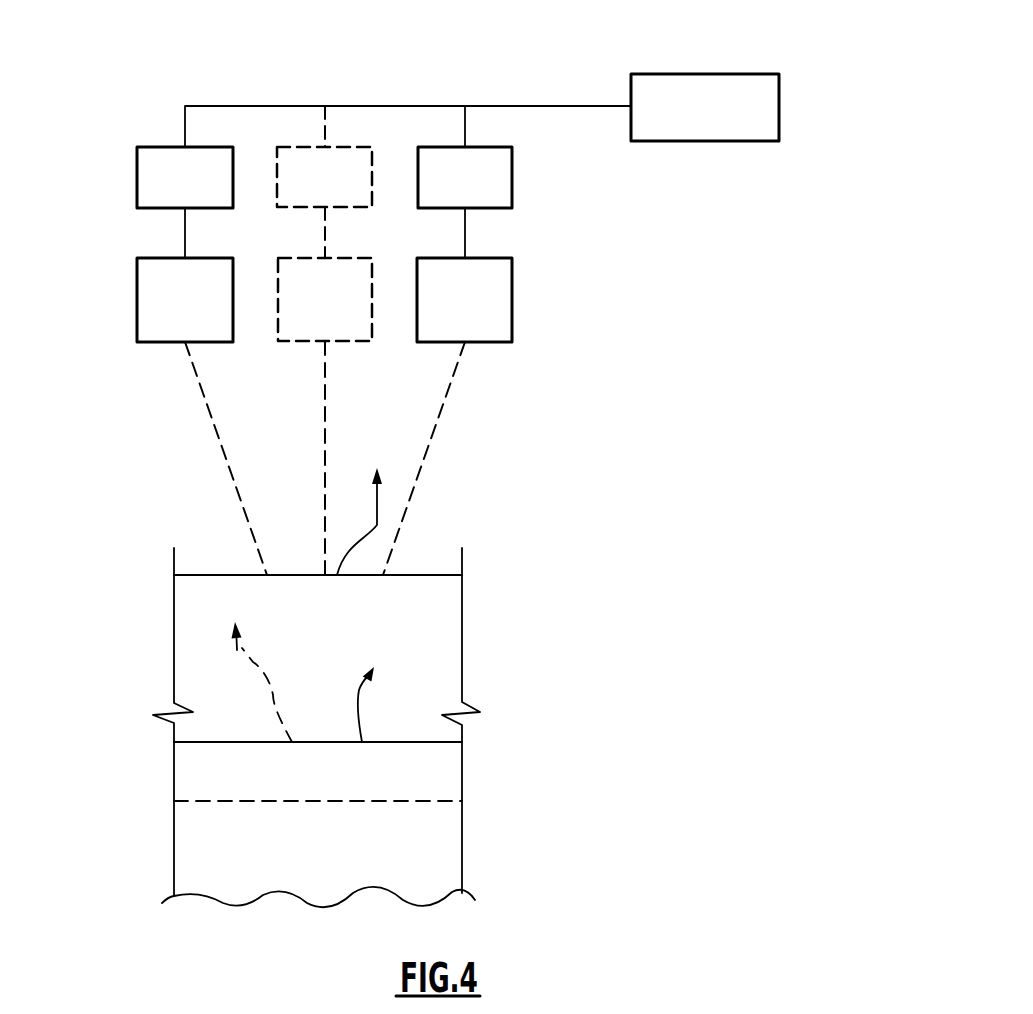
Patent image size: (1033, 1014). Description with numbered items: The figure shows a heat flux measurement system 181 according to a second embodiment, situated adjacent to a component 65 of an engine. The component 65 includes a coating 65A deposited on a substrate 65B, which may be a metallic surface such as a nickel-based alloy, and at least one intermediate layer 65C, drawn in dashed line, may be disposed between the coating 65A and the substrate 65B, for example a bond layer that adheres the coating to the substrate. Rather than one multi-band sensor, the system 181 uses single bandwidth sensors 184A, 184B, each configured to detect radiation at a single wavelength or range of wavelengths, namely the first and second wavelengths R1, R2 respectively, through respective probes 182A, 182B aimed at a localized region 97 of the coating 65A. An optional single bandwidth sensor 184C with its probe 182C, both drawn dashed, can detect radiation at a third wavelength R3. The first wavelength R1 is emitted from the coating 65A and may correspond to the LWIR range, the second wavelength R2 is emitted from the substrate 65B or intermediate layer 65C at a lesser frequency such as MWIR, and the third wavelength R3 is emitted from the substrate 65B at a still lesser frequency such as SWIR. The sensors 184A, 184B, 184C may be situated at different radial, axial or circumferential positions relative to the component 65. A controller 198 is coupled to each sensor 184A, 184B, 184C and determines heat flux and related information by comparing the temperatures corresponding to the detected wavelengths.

The heat flux measurement system 181 is at (170, 68).
The controller 198 is at (779, 93).
The single bandwidth sensor 184A is at (137, 175).
The single bandwidth sensor 184B is at (513, 175).
The single bandwidth sensor 184C is at (278, 207).
The probe 182A is at (137, 300).
The probe 182B is at (513, 300).
The probe 182C is at (278, 322).
The localized region 97 is at (323, 685).
The component 65 is at (348, 727).
The coating 65A is at (450, 667).
The substrate 65B is at (450, 842).
The intermediate layer 65C is at (450, 773).
The first wavelength R1 is at (380, 527).
The second wavelength R2 is at (360, 714).
The third wavelength R3 is at (262, 672).